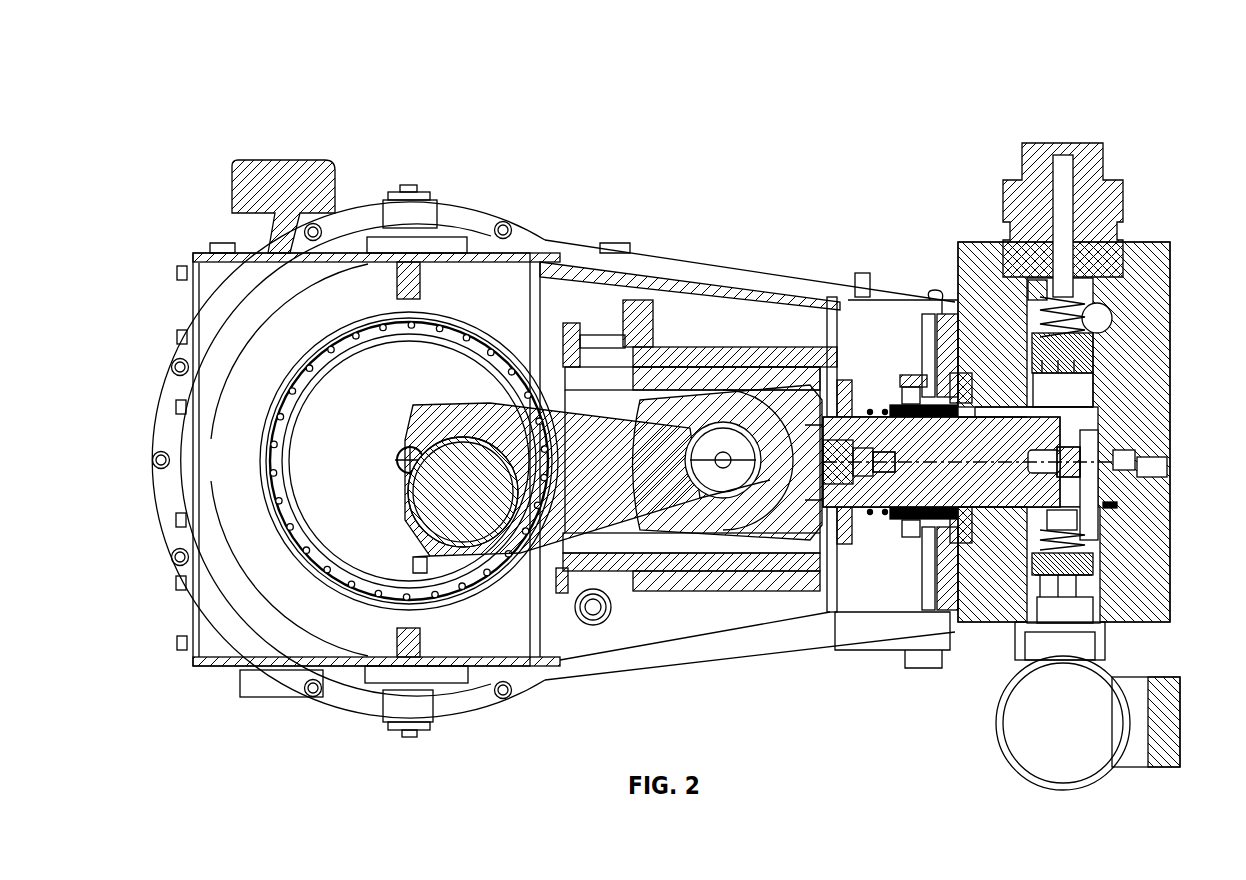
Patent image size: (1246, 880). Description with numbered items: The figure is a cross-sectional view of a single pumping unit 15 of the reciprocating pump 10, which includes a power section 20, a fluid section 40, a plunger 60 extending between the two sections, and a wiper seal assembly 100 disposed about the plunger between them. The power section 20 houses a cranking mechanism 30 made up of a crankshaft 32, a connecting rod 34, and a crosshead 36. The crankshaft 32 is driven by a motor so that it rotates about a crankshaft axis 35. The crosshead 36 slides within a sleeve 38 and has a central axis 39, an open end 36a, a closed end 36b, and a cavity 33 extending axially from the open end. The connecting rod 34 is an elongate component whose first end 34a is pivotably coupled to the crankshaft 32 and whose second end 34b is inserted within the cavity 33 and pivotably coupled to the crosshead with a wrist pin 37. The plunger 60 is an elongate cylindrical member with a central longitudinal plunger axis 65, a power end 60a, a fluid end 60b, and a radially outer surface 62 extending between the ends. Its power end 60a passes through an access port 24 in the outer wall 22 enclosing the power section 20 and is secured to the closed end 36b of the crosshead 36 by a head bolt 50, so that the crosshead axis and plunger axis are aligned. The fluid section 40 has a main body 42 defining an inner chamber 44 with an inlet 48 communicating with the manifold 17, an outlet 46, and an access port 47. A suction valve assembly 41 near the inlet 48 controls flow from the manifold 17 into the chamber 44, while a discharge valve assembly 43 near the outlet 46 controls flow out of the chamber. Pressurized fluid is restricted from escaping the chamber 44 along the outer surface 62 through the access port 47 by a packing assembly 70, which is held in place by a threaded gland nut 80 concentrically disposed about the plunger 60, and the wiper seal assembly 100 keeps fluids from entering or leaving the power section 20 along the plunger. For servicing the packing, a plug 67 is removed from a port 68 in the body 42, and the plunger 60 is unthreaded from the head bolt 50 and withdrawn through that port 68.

The pump 10 is at (262, 96).
The power section 20 is at (522, 144).
The pumping unit 15 is at (706, 148).
The fluid section 40 is at (976, 156).
The cranking mechanism 30 is at (588, 320).
The crankshaft 32 is at (425, 500).
The cavity 33 is at (690, 520).
The connecting rod 34 is at (642, 500).
The first end 34a is at (400, 505).
The second end 34b is at (780, 480).
The crankshaft axis 35 is at (398, 455).
The crosshead 36 is at (745, 545).
The open end 36a is at (628, 540).
The closed end 36b is at (822, 510).
The wrist pin 37 is at (710, 440).
The sleeve 38 is at (735, 355).
The central axis 39 is at (895, 478).
The plunger axis 65 is at (884, 462).
The outer wall 22 is at (838, 320).
The access port 24 is at (836, 398).
The wiper seal assembly 100 is at (878, 400).
The gland nut 80 is at (932, 385).
The head bolt 50 is at (842, 472).
The plunger 60 is at (1013, 508).
The power end 60a is at (805, 425).
The fluid end 60b is at (1078, 430).
The main body 42 is at (1170, 282).
The discharge valve assembly 43 is at (1020, 322).
The inner chamber 44 is at (1088, 405).
The outlet 46 is at (1108, 308).
The packing assembly 70 is at (982, 402).
The radially outer surface 62 is at (1050, 415).
The plug 67 is at (1155, 492).
The port 68 is at (1148, 520).
The suction valve assembly 41 is at (1098, 555).
The access port 47 is at (1003, 510).
The inlet 48 is at (1092, 615).
The manifold 17 is at (1000, 738).